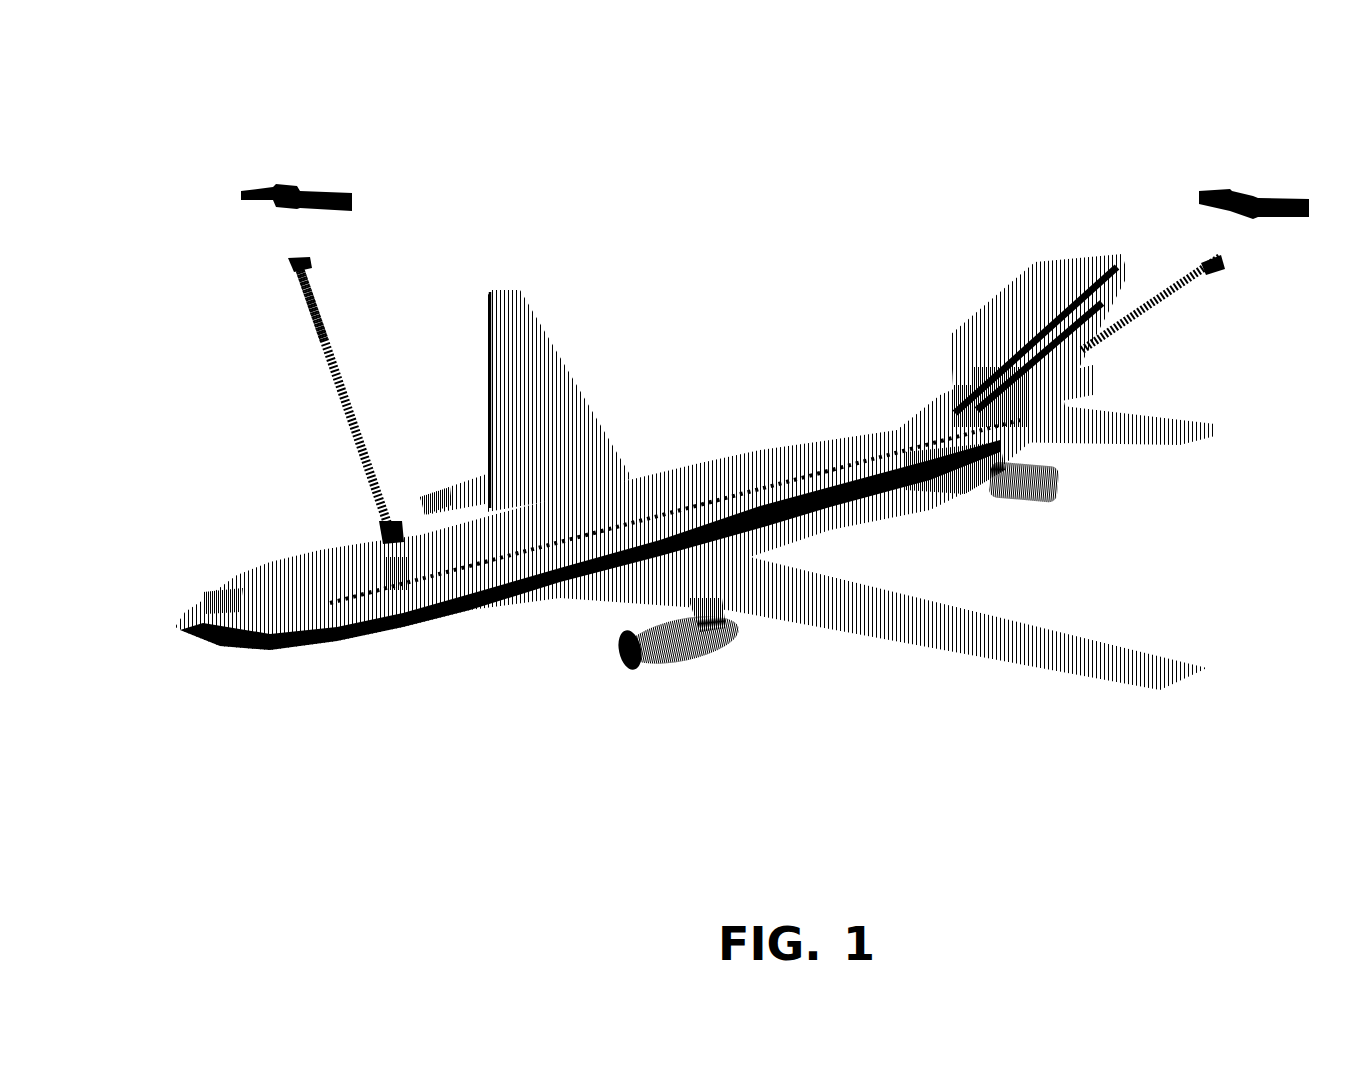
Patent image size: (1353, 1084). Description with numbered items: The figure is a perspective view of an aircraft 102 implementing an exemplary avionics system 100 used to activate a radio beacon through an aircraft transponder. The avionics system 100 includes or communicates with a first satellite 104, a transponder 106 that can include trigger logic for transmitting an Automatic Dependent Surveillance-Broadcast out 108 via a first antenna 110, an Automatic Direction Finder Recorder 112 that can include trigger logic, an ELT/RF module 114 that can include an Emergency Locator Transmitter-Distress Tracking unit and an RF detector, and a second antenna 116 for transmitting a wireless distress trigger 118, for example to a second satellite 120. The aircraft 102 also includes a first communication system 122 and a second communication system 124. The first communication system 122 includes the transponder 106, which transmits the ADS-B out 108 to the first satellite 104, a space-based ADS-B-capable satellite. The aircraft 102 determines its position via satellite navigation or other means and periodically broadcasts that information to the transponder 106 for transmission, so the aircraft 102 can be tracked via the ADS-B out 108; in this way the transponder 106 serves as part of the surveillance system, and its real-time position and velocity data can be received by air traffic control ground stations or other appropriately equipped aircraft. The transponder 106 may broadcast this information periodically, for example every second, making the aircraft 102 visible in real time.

The avionics system 100 is at (143, 133).
The aircraft 102 is at (508, 286).
The first satellite 104 is at (279, 184).
The transponder 106 is at (412, 628).
The ADS-B out 108 is at (334, 349).
The first antenna 110 is at (363, 526).
The Automatic Direction Finder Recorder 112 is at (962, 496).
The ELT/RF module 114 is at (990, 357).
The second antenna 116 is at (1069, 371).
The wireless distress trigger 118 is at (1160, 280).
The second satellite 120 is at (1247, 187).
The first communication system 122 is at (395, 247).
The second communication system 124 is at (947, 210).